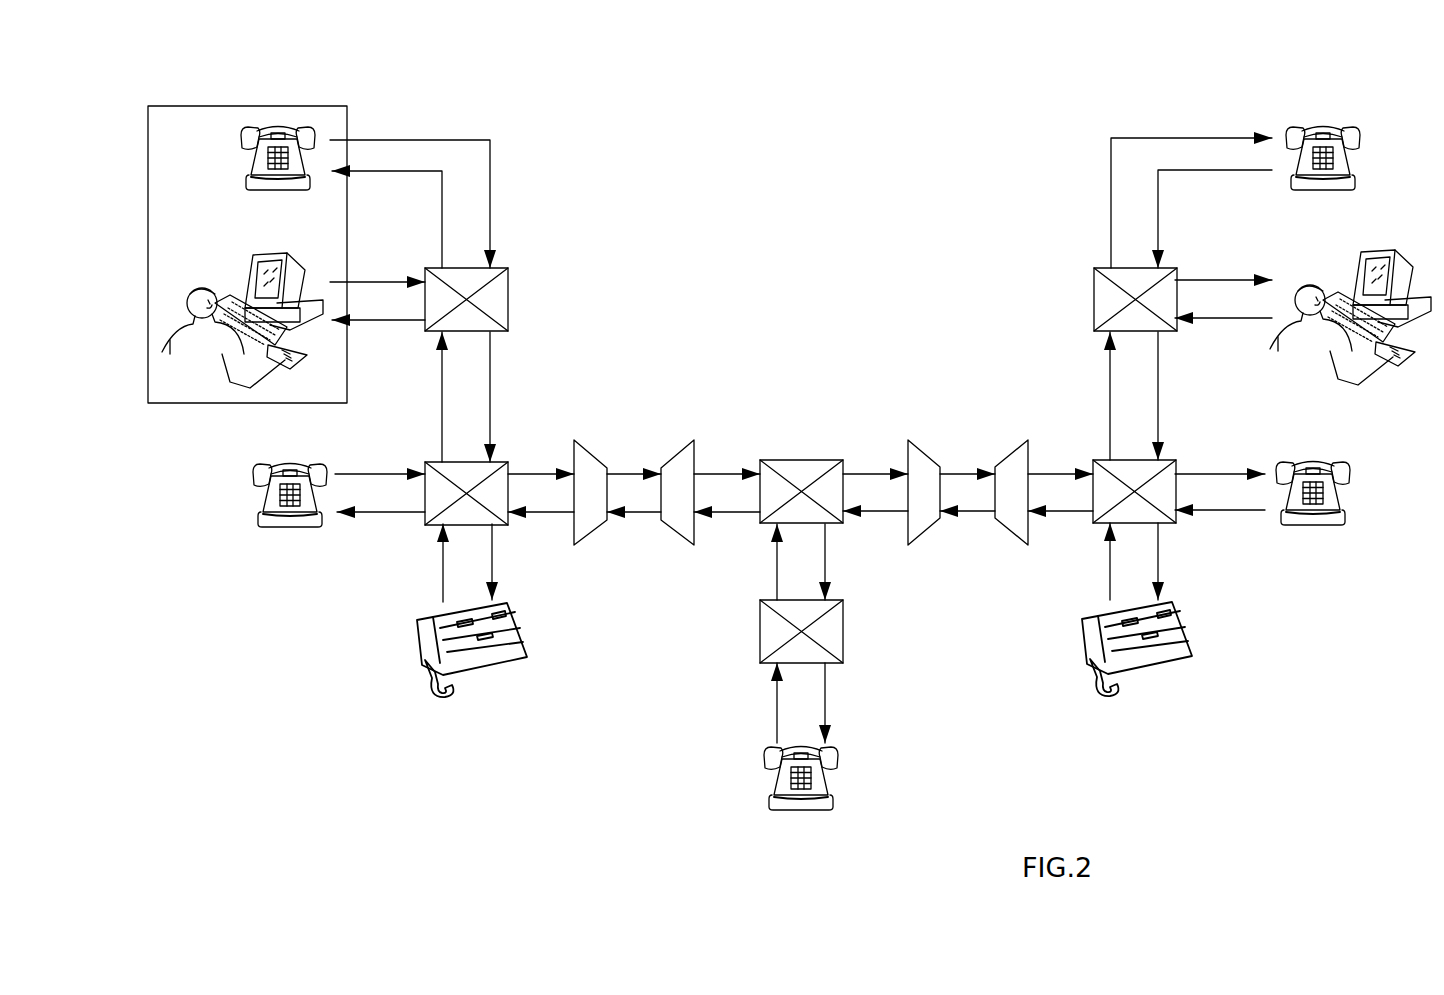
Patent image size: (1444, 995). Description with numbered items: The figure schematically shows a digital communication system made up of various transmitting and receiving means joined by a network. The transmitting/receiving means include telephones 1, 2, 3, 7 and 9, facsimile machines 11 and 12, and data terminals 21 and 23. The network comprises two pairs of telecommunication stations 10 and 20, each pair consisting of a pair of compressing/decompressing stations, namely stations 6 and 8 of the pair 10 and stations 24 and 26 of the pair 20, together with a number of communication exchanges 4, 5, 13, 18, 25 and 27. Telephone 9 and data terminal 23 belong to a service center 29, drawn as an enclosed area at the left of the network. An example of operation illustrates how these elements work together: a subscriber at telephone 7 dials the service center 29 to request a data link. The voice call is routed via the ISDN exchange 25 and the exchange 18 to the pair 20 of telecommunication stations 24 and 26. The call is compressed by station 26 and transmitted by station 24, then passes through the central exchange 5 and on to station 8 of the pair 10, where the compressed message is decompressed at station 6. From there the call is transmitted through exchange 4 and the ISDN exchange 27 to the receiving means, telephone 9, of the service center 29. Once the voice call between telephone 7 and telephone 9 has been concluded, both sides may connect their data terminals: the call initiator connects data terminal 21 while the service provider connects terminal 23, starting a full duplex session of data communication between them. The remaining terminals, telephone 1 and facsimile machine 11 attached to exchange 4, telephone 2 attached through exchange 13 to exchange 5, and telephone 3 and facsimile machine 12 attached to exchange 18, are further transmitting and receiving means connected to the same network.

The telephone 1 is at (290, 523).
The telephone 2 is at (780, 778).
The telephone 3 is at (1343, 510).
The communication exchange 4 is at (507, 462).
The communication exchange 5 is at (815, 460).
The compressing/decompressing station 6 is at (590, 530).
The telephone 7 is at (1312, 125).
The compressing/decompressing station 8 is at (670, 527).
The telephone 9 is at (250, 166).
The pair of telecommunication stations 10 is at (633, 457).
The facsimile machine 11 is at (420, 643).
The facsimile machine 12 is at (1193, 637).
The communication exchange 13 is at (760, 623).
The communication exchange 18 is at (1097, 460).
The pair of telecommunication stations 20 is at (960, 458).
The data terminal 21 is at (1423, 370).
The data terminal 23 is at (235, 258).
The compressing/decompressing station 24 is at (928, 527).
The ISDN exchange 25 is at (1094, 300).
The compressing/decompressing station 26 is at (1007, 530).
The ISDN exchange 27 is at (510, 301).
The service center 29 is at (187, 425).